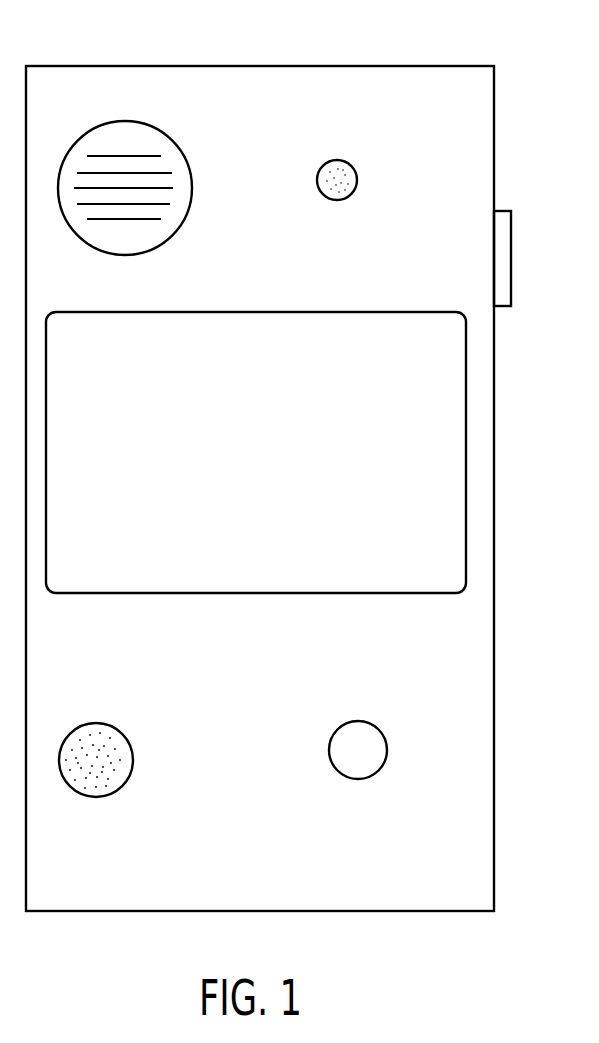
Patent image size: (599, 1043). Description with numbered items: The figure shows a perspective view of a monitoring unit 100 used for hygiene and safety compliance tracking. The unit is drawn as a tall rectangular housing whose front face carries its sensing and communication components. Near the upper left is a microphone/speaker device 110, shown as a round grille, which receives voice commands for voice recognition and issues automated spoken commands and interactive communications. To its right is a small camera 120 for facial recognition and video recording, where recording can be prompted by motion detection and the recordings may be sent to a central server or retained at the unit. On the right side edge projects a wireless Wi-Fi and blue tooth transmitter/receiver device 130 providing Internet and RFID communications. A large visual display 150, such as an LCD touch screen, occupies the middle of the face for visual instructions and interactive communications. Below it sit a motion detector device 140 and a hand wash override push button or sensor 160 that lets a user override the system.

The monitoring unit 100 is at (403, 65).
The microphone/speaker device 110 is at (125, 121).
The camera 120 is at (337, 160).
The wireless Wi-Fi and blue tooth transmitter/receiver device 130 is at (512, 258).
The motion detector device 140 is at (358, 721).
The visual display 150 is at (372, 312).
The hand wash override push button or sensor 160 is at (96, 723).